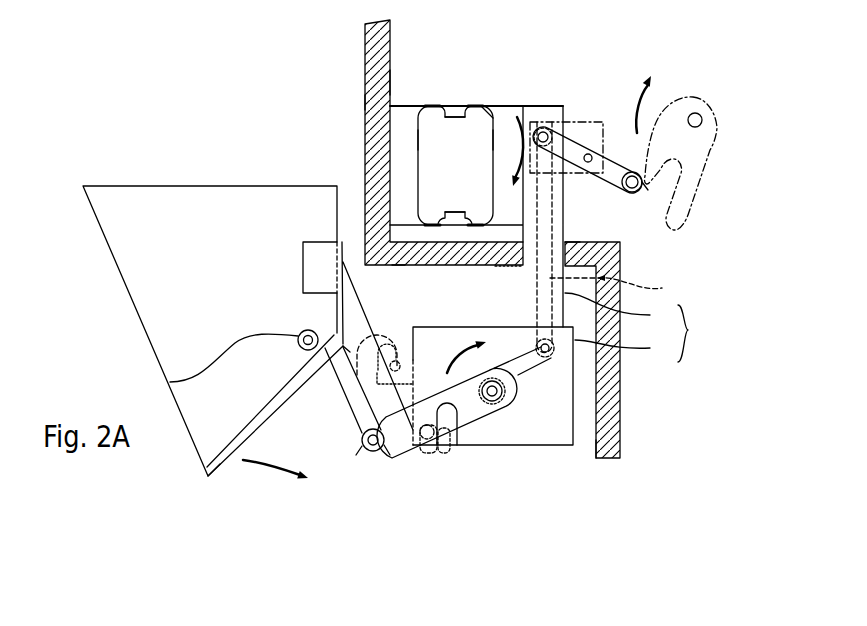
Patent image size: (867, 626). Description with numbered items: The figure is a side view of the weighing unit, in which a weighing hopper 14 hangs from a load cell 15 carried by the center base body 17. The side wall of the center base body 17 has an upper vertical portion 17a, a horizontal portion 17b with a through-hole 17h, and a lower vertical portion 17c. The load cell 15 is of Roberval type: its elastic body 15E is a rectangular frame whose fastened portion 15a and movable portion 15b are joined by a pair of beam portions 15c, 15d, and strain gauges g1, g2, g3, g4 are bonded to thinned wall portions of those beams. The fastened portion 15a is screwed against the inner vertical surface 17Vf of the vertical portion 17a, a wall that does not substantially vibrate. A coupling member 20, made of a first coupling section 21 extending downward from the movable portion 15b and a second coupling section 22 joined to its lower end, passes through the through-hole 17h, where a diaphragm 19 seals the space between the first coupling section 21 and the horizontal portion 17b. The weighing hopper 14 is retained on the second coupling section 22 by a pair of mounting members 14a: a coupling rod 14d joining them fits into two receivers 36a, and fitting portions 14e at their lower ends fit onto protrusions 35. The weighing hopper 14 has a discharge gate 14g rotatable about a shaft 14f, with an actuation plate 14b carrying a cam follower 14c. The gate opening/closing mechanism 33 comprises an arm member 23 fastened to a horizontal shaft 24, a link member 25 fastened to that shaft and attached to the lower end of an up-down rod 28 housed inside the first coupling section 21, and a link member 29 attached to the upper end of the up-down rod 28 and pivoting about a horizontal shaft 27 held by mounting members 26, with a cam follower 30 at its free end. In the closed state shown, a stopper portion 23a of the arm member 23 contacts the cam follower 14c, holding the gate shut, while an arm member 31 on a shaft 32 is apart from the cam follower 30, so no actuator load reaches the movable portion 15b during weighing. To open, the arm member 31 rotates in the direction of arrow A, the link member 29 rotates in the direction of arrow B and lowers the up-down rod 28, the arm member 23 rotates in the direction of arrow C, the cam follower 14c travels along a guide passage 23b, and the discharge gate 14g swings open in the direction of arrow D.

The weighing hopper 14 is at (130, 176).
The mounting members 14a is at (352, 262).
The actuation plate 14b is at (323, 410).
The cam follower 14c is at (348, 455).
The coupling rod 14d is at (357, 368).
The fitting portions 14e is at (418, 450).
The shaft 14f is at (170, 382).
The discharge gate 14g is at (233, 462).
The load cell 15 is at (456, 97).
The fastened portion 15a is at (403, 115).
The movable portion 15b is at (507, 117).
The beam portion 15c is at (450, 104).
The beam portion 15d is at (450, 230).
The elastic body 15E is at (486, 106).
The strain gauge g1 is at (433, 106).
The strain gauge g2 is at (480, 106).
The strain gauge g3 is at (473, 230).
The strain gauge g4 is at (432, 230).
The center base body 17 is at (356, 59).
The vertical portion 17a is at (367, 102).
The horizontal portion 17b is at (398, 267).
The vertical portion 17c is at (597, 458).
The through-hole 17h is at (565, 243).
The inner vertical surface 17Vf is at (389, 84).
The diaphragm 19 is at (515, 267).
The coupling member 20 is at (692, 333).
The first coupling section 21 is at (618, 308).
The second coupling section 22 is at (623, 346).
The arm member 23 is at (378, 467).
The stopper portion 23a is at (343, 462).
The guide passage 23b is at (380, 467).
The horizontal shaft 24 is at (486, 401).
The link member 25 is at (527, 370).
The mounting members 26 is at (572, 120).
The horizontal shaft 27 is at (590, 128).
The up-down rod 28 is at (617, 285).
The link member 29 is at (606, 193).
The cam follower 30 is at (641, 198).
The arm member 31 is at (657, 95).
The shaft 32 is at (698, 110).
The gate opening/closing mechanism 33 is at (495, 485).
The protrusions 35 is at (430, 455).
The receivers 36a is at (380, 386).
The arrow A is at (632, 112).
The arrow B is at (520, 115).
The arrow C is at (450, 357).
The arrow D is at (272, 487).